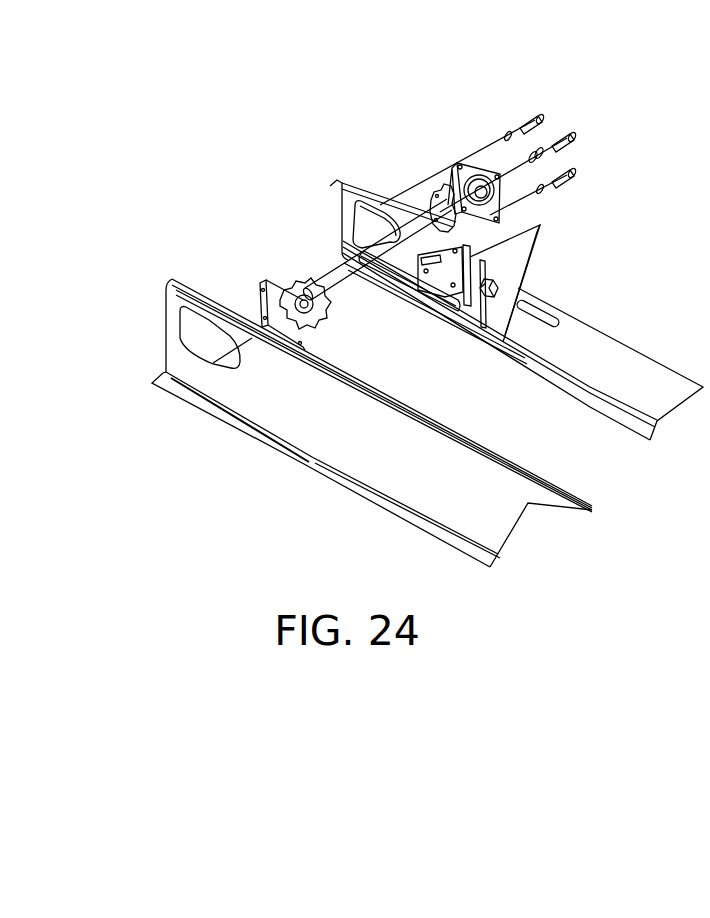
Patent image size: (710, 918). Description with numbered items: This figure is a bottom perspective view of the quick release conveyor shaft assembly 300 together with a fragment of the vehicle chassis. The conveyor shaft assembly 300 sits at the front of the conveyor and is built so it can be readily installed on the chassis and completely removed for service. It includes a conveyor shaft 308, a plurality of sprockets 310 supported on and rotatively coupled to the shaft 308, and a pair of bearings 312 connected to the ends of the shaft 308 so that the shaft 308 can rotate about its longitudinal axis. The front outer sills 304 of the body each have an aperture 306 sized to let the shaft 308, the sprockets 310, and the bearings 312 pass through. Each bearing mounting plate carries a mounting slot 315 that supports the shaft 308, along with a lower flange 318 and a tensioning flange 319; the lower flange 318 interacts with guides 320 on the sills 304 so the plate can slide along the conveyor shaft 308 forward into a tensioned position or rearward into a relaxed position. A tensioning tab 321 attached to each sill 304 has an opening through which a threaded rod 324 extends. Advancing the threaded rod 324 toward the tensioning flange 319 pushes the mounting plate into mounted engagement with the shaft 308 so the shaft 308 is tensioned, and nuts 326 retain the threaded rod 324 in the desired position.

The quick release conveyor shaft assembly 300 is at (142, 176).
The front outer sill 304 is at (166, 282).
The aperture 306 is at (190, 334).
The conveyor shaft 308 is at (322, 268).
The sprocket 310 is at (287, 272).
The bearing 312 is at (262, 288).
The mounting slot 315 is at (497, 300).
The lower flange 318 is at (446, 308).
The tensioning flange 319 is at (542, 226).
The guide 320 is at (400, 280).
The tensioning tab 321 is at (542, 245).
The threaded rod 324 is at (562, 331).
The nut 326 is at (520, 292).